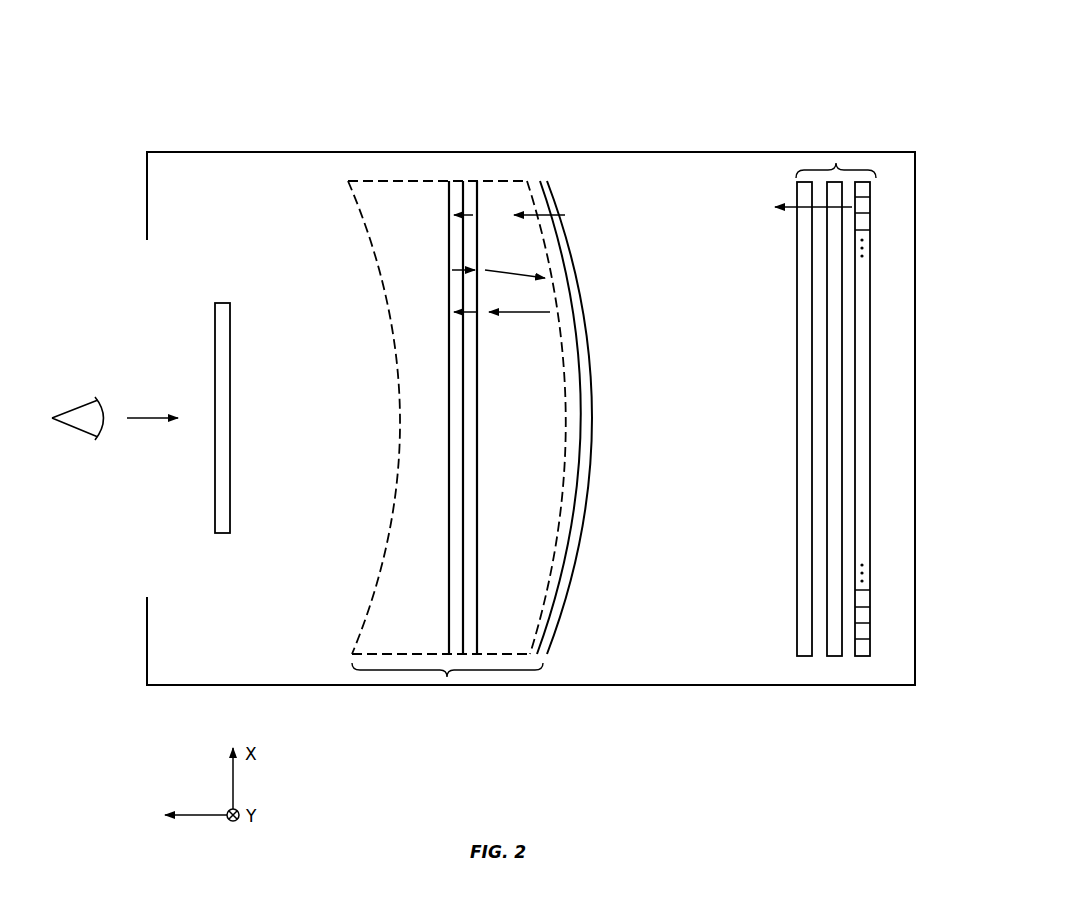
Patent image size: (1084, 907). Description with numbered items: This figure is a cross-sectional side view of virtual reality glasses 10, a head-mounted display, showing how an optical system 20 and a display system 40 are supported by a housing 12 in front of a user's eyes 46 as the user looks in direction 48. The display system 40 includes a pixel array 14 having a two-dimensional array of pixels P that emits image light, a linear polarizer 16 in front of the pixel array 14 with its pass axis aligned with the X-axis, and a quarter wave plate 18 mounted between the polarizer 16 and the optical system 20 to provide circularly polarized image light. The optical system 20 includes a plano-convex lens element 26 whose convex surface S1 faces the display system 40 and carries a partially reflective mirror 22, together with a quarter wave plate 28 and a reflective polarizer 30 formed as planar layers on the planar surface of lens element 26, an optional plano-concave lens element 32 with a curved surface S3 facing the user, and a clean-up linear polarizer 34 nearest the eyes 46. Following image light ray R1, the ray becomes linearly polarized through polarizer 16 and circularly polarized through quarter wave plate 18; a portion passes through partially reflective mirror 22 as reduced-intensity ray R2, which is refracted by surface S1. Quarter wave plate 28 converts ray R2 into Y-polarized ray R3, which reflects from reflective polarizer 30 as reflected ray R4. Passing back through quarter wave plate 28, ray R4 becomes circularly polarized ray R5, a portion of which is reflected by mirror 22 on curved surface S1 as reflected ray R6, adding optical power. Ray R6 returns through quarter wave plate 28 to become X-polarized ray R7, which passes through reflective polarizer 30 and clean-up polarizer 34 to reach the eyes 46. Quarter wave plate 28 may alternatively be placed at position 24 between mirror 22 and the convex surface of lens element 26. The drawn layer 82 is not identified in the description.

The virtual reality glasses 10 is at (728, 66).
The housing 12 is at (783, 152).
The pixel array 14 is at (862, 657).
The linear polarizer 16 is at (833, 657).
The quarter wave plate 18 is at (803, 657).
The optical system 20 is at (447, 677).
The partially reflective mirror 22 is at (545, 183).
The position 24 is at (528, 185).
The lens element 26 is at (497, 190).
The quarter wave plate 28 is at (468, 190).
The reflective polarizer 30 is at (455, 188).
The lens element 32 is at (400, 195).
The clean-up linear polarizer 34 is at (222, 303).
The display system 40 is at (836, 163).
The user's eyes 46 is at (85, 405).
The direction 48 is at (150, 418).
The layer 82 is at (465, 622).
The convex surface S1 is at (540, 640).
The concave surface S3 is at (373, 600).
The pixels P is at (865, 600).
The image light ray R1 is at (811, 220).
The reduced-intensity ray R2 is at (537, 229).
The ray R3 is at (452, 222).
The reflected ray R4 is at (455, 278).
The circularly polarized ray R5 is at (508, 272).
The reflected ray R6 is at (520, 314).
The ray R7 is at (452, 318).